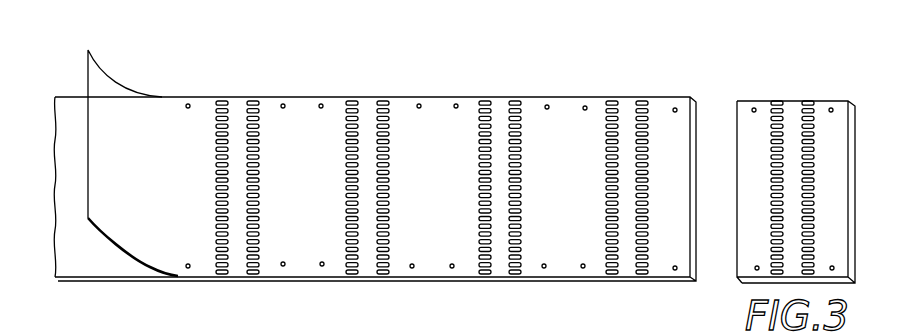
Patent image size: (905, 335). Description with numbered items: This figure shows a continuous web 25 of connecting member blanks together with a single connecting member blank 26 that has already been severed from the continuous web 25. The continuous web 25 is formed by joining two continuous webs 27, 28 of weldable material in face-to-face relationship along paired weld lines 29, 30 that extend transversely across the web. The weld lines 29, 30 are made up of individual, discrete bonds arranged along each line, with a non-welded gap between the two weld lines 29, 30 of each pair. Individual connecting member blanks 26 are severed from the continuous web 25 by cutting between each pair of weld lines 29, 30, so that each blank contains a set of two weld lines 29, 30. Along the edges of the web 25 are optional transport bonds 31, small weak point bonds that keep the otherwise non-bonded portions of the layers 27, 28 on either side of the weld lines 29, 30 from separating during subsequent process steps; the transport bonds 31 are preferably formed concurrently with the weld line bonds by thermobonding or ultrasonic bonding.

The continuous web 25 is at (632, 91).
The connecting member blank 26 is at (837, 130).
The continuous web of weldable material 27 is at (112, 106).
The continuous web of weldable material 28 is at (103, 258).
The weld line 29 is at (222, 100).
The weld line 30 is at (253, 100).
The transport bond 31 is at (584, 106).